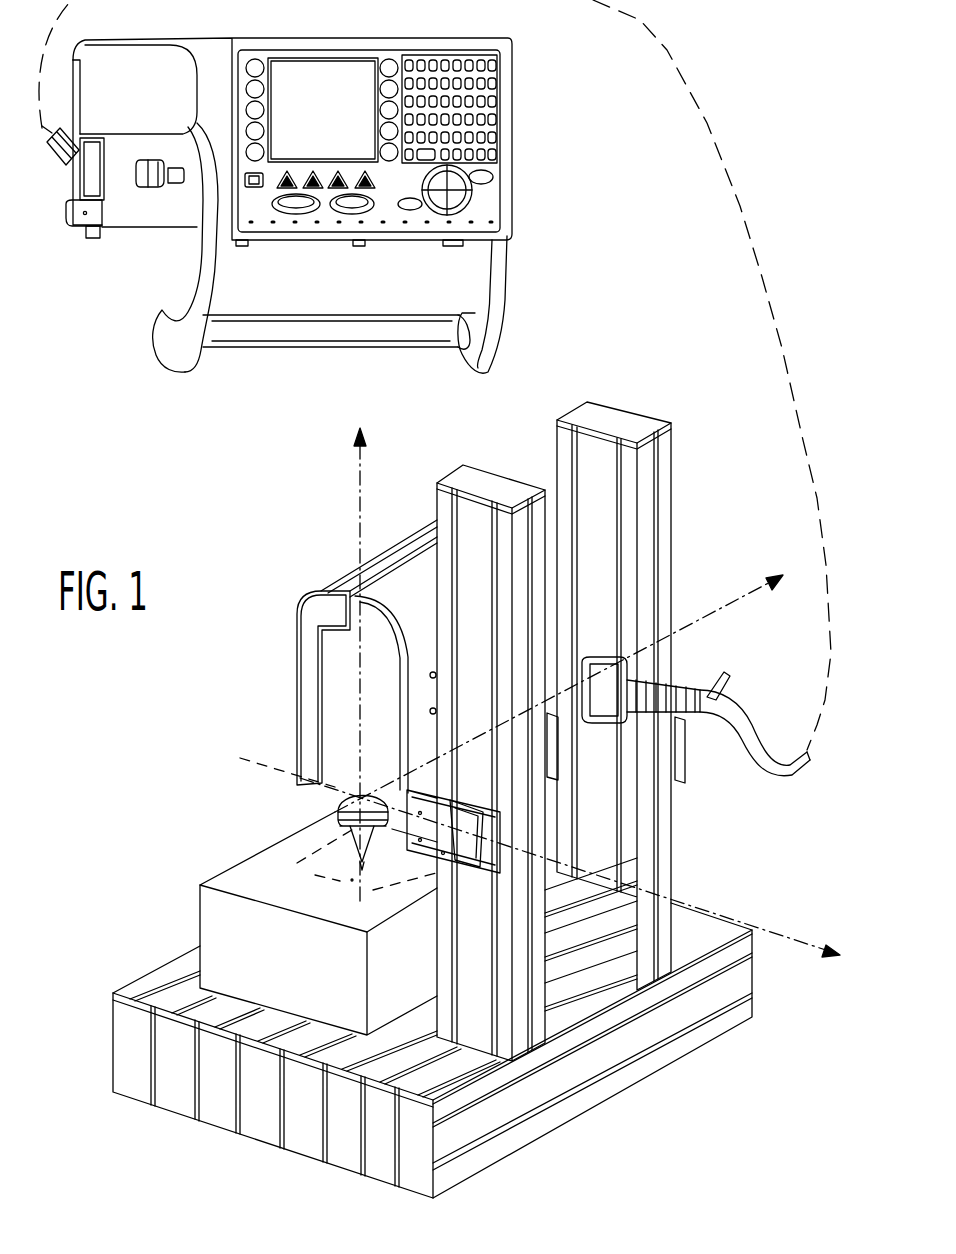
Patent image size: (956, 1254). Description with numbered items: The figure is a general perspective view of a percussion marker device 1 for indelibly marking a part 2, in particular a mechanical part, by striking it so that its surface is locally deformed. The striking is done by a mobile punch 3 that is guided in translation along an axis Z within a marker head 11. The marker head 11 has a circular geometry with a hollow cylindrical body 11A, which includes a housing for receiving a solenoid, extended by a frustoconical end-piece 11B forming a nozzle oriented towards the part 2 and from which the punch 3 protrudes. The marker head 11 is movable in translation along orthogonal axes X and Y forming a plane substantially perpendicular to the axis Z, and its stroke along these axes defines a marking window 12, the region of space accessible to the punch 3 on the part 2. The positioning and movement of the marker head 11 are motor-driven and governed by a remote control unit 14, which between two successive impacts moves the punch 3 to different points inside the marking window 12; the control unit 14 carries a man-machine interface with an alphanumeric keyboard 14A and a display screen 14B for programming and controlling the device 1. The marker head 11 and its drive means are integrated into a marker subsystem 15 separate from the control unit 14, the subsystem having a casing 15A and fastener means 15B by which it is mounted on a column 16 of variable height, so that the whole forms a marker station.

The marker device 1 is at (617, 345).
The part to be marked 2 is at (290, 985).
The punch 3 is at (337, 874).
The marker head 11 is at (338, 801).
The hollow cylindrical body 11A is at (352, 800).
The frustoconical end-piece 11B is at (341, 834).
The marking window 12 is at (352, 880).
The control unit 14 is at (142, 212).
The alphanumeric keyboard 14A is at (497, 104).
The display screen 14B is at (348, 116).
The marker subsystem 15 is at (296, 668).
The casing 15A is at (318, 612).
The fastener means 15B is at (431, 680).
The column 16 is at (633, 420).